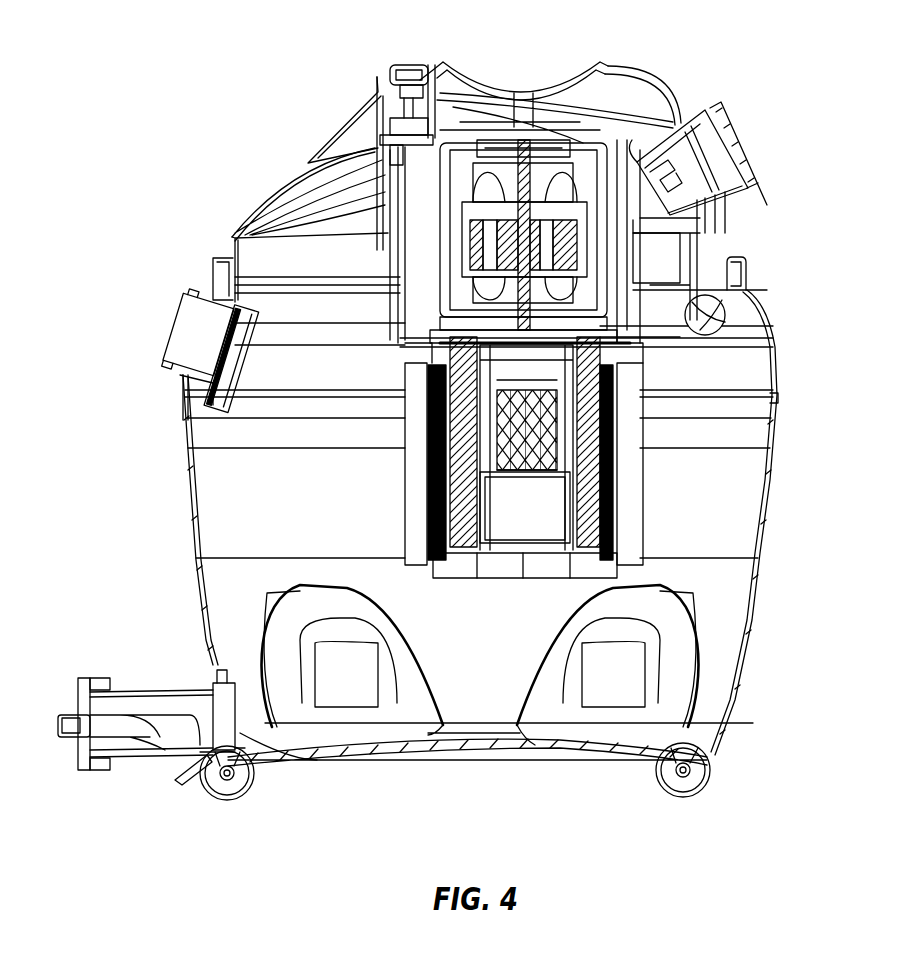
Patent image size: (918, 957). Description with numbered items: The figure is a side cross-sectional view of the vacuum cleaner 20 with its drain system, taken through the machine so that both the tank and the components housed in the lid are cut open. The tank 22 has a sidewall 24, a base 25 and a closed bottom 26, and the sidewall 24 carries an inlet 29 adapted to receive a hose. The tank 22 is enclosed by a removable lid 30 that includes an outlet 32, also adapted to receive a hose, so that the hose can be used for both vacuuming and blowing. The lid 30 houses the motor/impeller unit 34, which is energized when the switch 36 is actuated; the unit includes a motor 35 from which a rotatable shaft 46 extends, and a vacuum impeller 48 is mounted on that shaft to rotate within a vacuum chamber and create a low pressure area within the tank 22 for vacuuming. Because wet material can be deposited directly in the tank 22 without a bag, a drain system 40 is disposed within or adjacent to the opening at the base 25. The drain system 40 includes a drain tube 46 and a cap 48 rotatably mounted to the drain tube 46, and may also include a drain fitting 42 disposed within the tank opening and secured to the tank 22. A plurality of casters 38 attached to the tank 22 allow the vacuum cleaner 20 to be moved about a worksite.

The vacuum cleaner 20 is at (229, 79).
The tank 22 is at (786, 619).
The sidewall 24 is at (190, 490).
The base 25 is at (200, 630).
The closed bottom 26 is at (307, 753).
The inlet 29 is at (181, 316).
The removable lid 30 is at (260, 212).
The outlet 32 is at (703, 130).
The motor/impeller unit 34 is at (540, 177).
The motor 35 is at (521, 150).
The switch 36 is at (385, 80).
The casters 38 is at (237, 800).
The drain system 40 is at (67, 638).
The drain fitting 42 is at (183, 753).
The drain tube 46 is at (605, 240).
The cap 48 is at (495, 357).